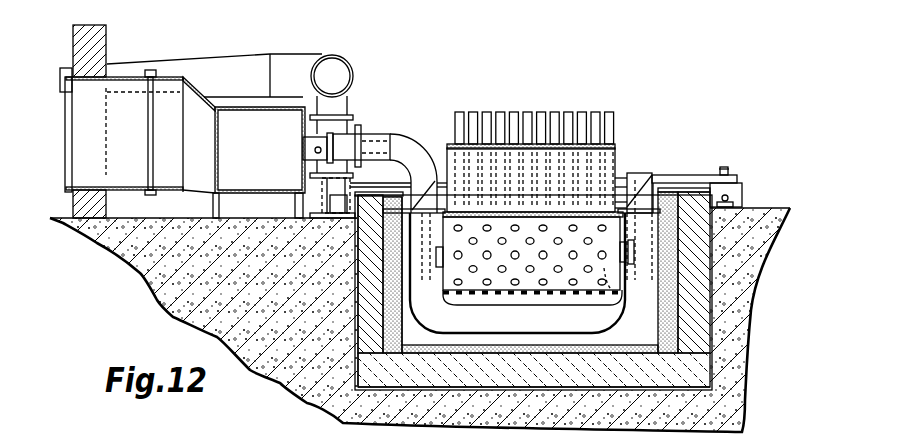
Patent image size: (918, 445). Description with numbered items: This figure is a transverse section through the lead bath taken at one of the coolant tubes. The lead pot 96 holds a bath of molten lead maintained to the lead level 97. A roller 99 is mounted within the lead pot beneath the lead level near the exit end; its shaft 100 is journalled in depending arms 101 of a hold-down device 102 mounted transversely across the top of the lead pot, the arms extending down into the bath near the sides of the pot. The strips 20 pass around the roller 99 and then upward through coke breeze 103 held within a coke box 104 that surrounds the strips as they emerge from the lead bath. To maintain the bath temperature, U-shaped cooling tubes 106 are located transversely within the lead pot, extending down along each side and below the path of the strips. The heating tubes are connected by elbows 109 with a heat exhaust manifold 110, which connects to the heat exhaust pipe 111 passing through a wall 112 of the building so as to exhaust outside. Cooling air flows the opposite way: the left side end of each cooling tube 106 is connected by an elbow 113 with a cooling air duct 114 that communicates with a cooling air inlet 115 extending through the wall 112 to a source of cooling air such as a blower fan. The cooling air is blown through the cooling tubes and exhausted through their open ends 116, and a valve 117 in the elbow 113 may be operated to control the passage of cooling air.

The strips 20 is at (498, 113).
The lead pot 96 is at (697, 332).
The lead level 97 is at (413, 222).
The roller 99 is at (607, 273).
The shaft 100 is at (443, 288).
The depending arm 101 is at (643, 270).
The hold-down device 102 is at (685, 175).
The coke breeze 103 is at (598, 140).
The coke box 104 is at (613, 157).
The U-shaped cooling tube 106 is at (460, 313).
The elbow 109 is at (408, 132).
The heat exhaust manifold 110 is at (340, 73).
The heat exhaust pipe 111 is at (238, 63).
The wall 112 is at (75, 43).
The elbow 113 is at (393, 140).
The cooling air duct 114 is at (258, 182).
The cooling air inlet 115 is at (90, 153).
The open end 116 is at (640, 170).
The valve 117 is at (313, 143).